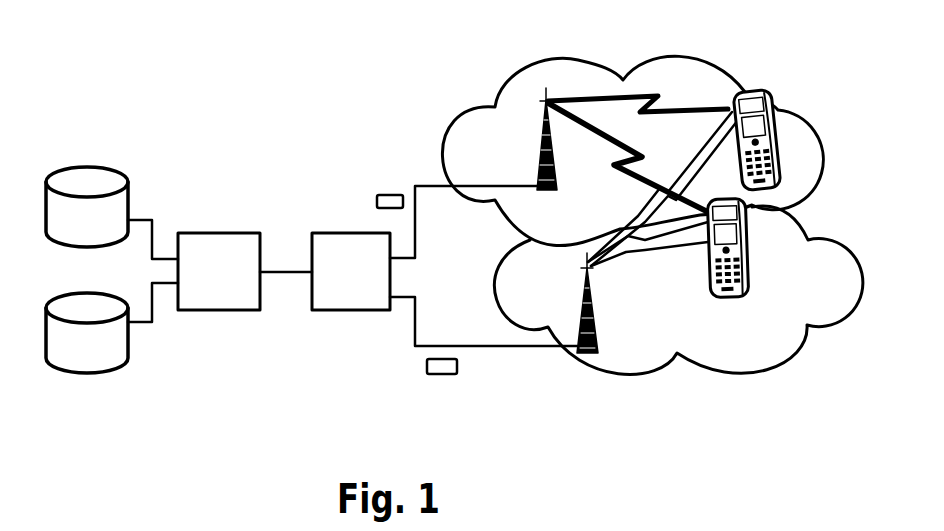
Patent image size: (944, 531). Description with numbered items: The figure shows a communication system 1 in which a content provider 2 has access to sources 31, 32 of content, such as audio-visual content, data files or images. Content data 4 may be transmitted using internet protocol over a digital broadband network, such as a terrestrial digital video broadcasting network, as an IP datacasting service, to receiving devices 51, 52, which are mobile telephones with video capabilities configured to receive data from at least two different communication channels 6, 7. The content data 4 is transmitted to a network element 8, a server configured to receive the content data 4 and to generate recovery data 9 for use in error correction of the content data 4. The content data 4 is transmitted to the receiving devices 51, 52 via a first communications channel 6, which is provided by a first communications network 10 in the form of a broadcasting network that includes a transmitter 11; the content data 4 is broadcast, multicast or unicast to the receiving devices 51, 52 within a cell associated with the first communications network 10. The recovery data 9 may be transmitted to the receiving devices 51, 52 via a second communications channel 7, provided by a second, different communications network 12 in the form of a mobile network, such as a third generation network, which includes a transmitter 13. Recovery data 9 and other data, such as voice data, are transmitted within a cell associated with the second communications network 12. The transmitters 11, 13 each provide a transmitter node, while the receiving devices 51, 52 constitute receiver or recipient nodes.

The communication system 1 is at (306, 428).
The content provider 2 is at (218, 297).
The source of content 31 is at (100, 178).
The source of content 32 is at (103, 358).
The content data 4 is at (375, 203).
The receiving device 51 is at (774, 100).
The receiving device 52 is at (750, 272).
The first communications channel 6 is at (655, 93).
The second communications channel 7 is at (708, 117).
The network element 8 is at (350, 297).
The recovery data 9 is at (445, 375).
The first communications network 10 is at (517, 77).
The transmitter 11 is at (537, 153).
The second communications network 12 is at (783, 360).
The transmitter 13 is at (595, 307).